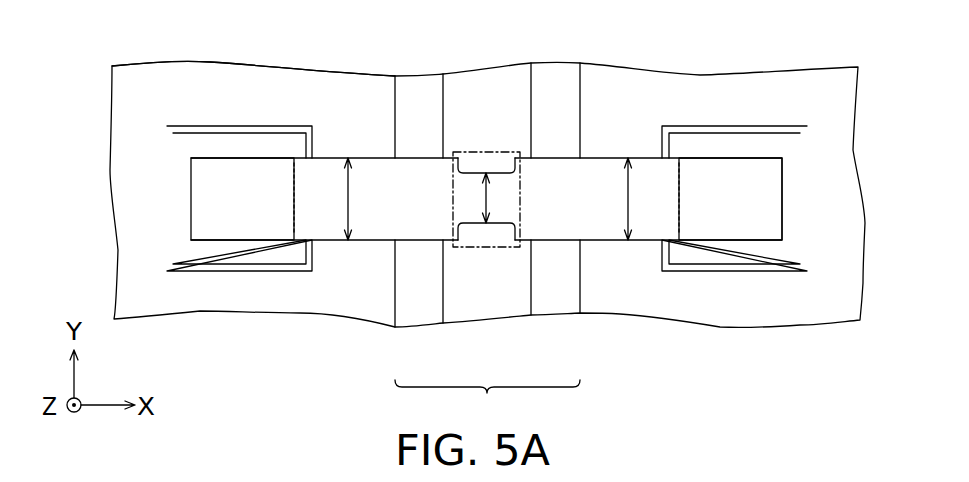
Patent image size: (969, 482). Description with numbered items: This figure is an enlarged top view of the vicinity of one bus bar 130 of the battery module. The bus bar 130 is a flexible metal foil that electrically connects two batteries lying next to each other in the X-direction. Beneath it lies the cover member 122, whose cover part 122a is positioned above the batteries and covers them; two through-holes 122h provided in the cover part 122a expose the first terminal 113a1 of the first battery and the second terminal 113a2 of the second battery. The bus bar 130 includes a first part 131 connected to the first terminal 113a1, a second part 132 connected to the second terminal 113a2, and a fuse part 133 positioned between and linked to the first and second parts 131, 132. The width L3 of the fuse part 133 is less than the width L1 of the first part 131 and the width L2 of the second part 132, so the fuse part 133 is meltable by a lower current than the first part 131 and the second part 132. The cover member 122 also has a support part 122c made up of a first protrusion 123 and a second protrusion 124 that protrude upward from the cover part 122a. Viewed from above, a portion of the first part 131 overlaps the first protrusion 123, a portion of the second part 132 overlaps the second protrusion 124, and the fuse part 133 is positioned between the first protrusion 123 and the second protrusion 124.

The cover member 122 is at (129, 177).
The cover part 122a is at (180, 95).
The support part 122c is at (487, 403).
The through-hole 122h is at (200, 268).
The first protrusion 123 is at (418, 308).
The second protrusion 124 is at (553, 302).
The first terminal 113a1 is at (255, 250).
The second terminal 113a2 is at (733, 253).
The bus bar 130 is at (760, 152).
The first part 131 is at (255, 197).
The second part 132 is at (720, 198).
The fuse part 133 is at (497, 150).
The width of the first part L1 is at (350, 200).
The width of the second part L2 is at (628, 198).
The width of the fuse part L3 is at (487, 200).